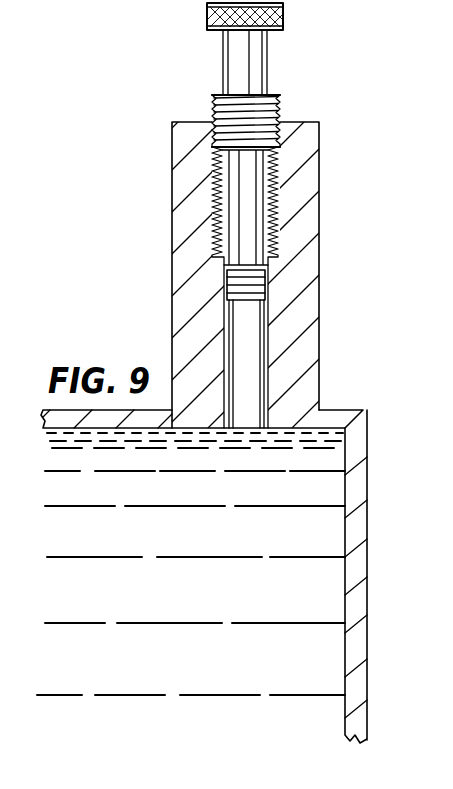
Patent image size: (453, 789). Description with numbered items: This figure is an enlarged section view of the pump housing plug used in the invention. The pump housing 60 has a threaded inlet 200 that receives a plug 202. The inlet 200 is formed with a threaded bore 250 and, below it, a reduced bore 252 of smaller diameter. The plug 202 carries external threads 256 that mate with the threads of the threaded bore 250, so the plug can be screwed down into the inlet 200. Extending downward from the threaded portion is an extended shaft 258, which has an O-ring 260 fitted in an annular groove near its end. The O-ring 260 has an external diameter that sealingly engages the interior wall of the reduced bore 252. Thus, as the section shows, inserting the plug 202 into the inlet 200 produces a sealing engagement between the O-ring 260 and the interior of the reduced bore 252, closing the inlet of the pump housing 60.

The threaded inlet 200 is at (385, 106).
The plug 202 is at (283, 19).
The external threads 256 is at (283, 104).
The extended shaft 258 is at (262, 188).
The threaded bore 250 is at (280, 233).
The O-ring 260 is at (266, 282).
The reduced bore 252 is at (265, 358).
The pump housing 60 is at (367, 514).